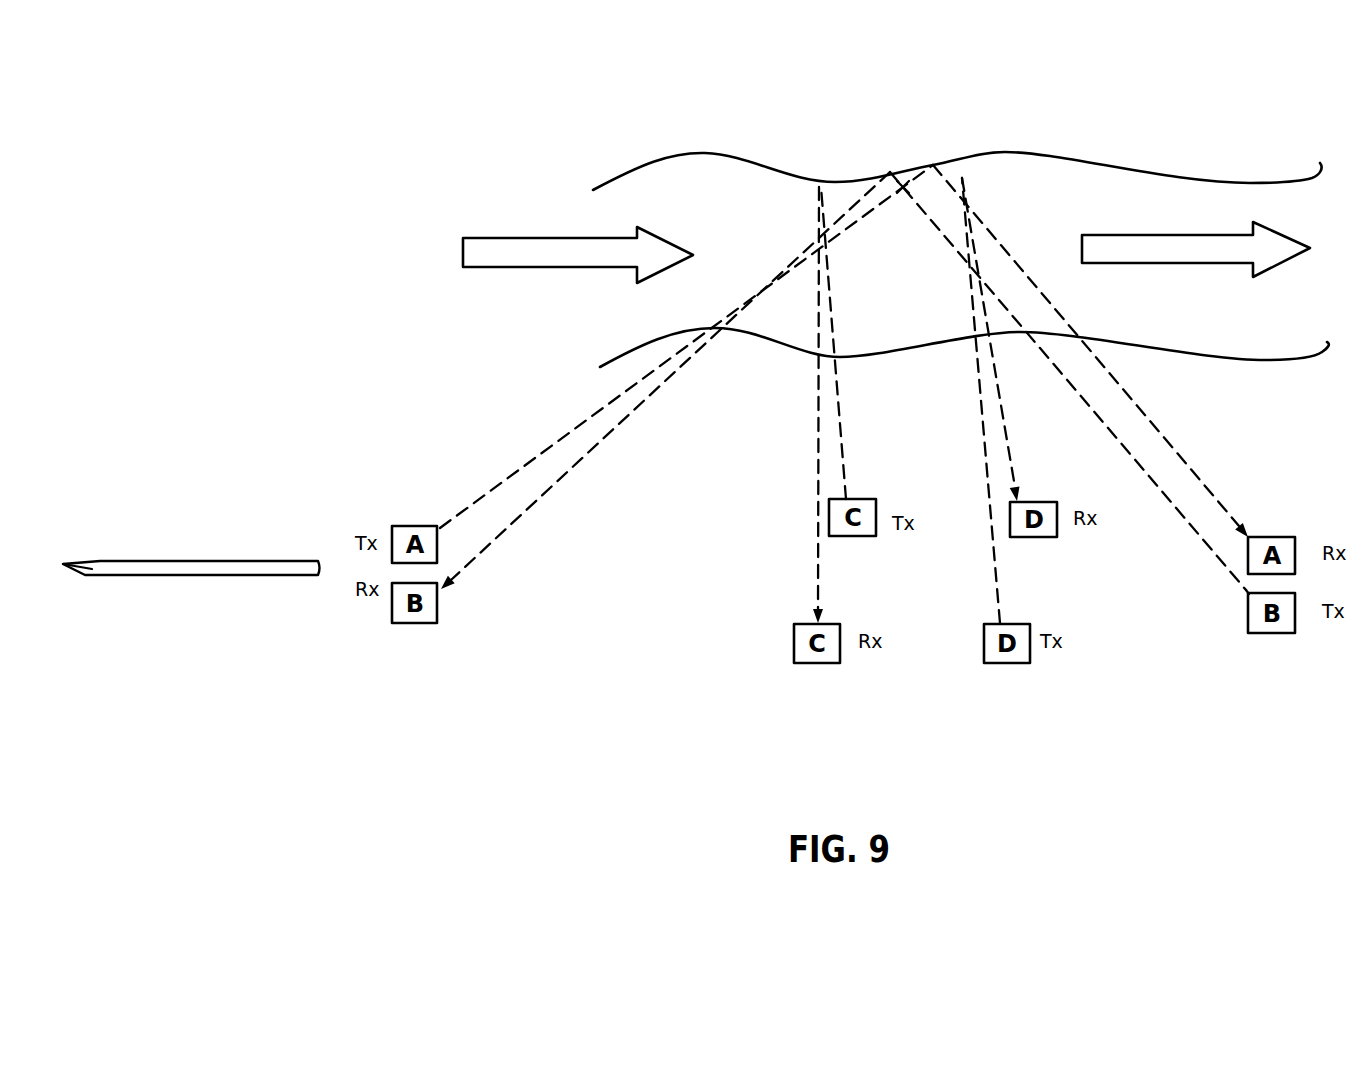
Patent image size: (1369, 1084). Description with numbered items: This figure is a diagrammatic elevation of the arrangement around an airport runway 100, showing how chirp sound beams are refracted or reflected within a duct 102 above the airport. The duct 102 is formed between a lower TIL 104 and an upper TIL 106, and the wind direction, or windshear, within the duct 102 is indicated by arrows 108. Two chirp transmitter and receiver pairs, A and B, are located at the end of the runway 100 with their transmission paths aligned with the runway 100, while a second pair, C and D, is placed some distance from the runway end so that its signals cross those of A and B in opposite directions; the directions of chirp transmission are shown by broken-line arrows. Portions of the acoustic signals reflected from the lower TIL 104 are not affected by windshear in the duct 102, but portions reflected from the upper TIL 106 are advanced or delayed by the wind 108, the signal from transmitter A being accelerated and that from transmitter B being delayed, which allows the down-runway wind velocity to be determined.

The runway 100 is at (268, 560).
The duct 102 is at (742, 189).
The lower TIL 104 is at (895, 352).
The upper TIL 106 is at (1050, 155).
The arrows indicating wind direction 108 is at (529, 250).